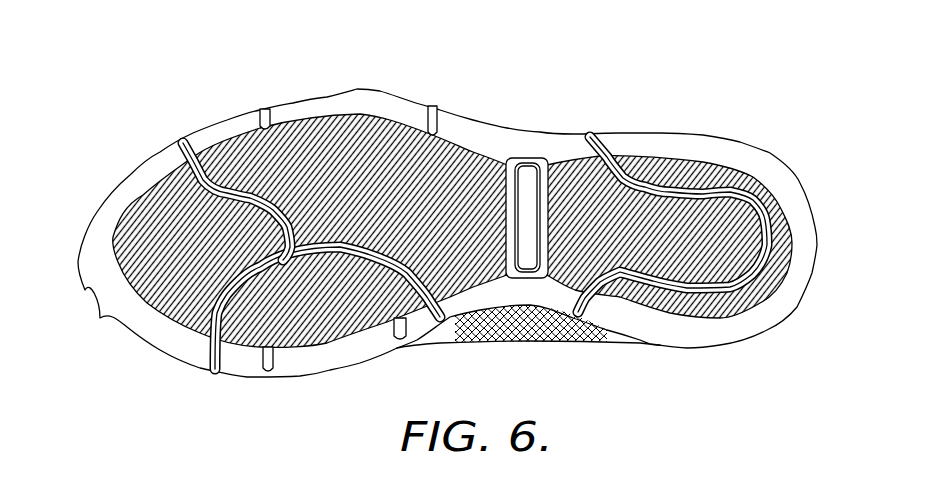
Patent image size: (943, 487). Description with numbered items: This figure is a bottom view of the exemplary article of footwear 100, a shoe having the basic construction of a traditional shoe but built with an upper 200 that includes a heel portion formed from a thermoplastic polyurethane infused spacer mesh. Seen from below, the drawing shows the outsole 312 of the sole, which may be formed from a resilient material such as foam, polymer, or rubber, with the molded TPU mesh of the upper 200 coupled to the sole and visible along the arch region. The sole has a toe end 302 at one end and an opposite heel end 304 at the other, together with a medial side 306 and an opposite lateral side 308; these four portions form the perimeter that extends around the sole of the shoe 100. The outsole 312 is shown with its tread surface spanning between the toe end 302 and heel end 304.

The article of footwear 100 is at (208, 80).
The upper 200 is at (537, 346).
The toe end 302 is at (74, 214).
The heel end 304 is at (816, 203).
The medial side 306 is at (395, 350).
The lateral side 308 is at (434, 103).
The outsole 312 is at (337, 123).